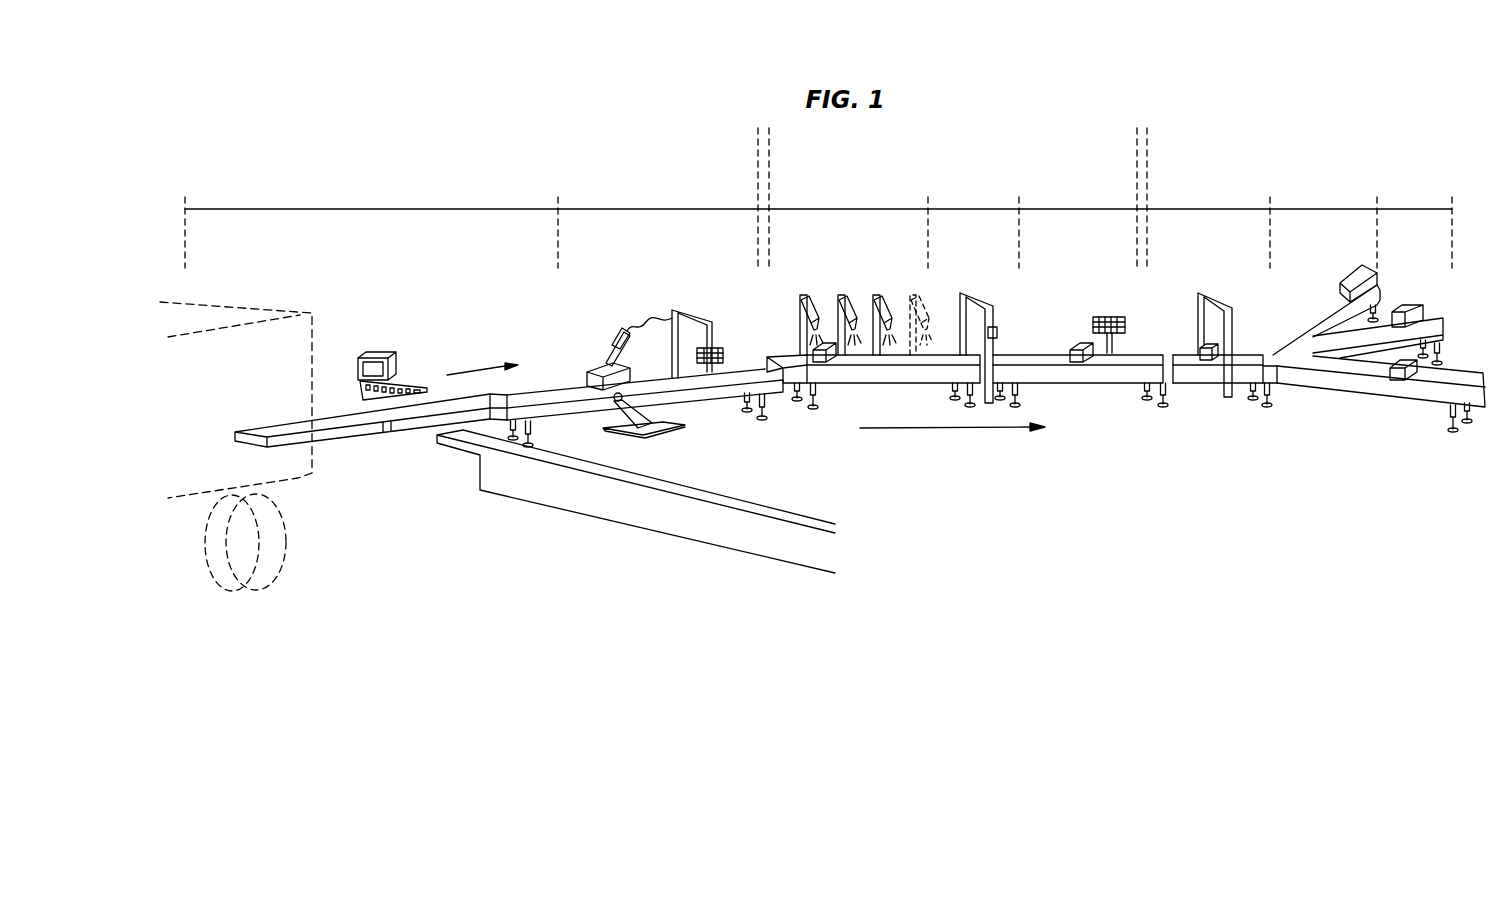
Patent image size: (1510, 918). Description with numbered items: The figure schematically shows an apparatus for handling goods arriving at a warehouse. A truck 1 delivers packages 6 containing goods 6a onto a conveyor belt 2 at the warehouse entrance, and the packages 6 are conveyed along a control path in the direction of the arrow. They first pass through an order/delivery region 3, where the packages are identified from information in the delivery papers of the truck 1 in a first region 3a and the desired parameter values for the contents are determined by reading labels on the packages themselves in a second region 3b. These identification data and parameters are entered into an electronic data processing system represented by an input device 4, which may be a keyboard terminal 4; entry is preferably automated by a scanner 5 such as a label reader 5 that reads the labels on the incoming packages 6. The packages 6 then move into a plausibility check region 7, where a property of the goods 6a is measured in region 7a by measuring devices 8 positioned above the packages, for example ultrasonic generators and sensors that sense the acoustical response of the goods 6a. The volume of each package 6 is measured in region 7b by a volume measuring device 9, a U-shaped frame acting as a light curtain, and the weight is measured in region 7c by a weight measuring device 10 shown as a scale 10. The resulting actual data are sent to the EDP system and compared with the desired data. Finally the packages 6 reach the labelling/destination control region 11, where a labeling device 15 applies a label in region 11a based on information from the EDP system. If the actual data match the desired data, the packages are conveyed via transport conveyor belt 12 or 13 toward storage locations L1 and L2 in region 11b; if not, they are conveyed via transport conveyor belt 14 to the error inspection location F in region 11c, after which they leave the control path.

The truck 1 is at (290, 468).
The conveyor belt 2 is at (357, 432).
The order/delivery region 3 is at (185, 176).
The region for package identification 3a is at (371, 225).
The region for determination of desired parameter values 3b is at (645, 287).
The input device 4 is at (397, 358).
The scanner (label reader) 5 is at (622, 326).
The package 6 is at (591, 375).
The goods 6a is at (597, 391).
The plausibility check region 7 is at (1137, 176).
The region for measurement of a property of the goods 7a is at (873, 296).
The region for measurement of volume 7b is at (973, 225).
The region for measurement of weight 7c is at (1083, 197).
The measuring devices 8 is at (912, 297).
The volume measuring device 9 is at (977, 295).
The weight measuring device (scale) 10 is at (1117, 317).
The labelling/destination control region 11 is at (1452, 176).
The labelling region 11a is at (1225, 295).
The storage location region 11b is at (1322, 197).
The error inspection region 11c is at (1412, 197).
The transport conveyor belt 12 is at (1387, 388).
The transport conveyor belt 13 is at (1437, 320).
The transport conveyor belt 14 is at (1317, 320).
The labeling device 15 is at (1213, 293).
The error inspection location F is at (1400, 272).
The storage location L1 is at (1427, 465).
The storage location L2 is at (1476, 300).